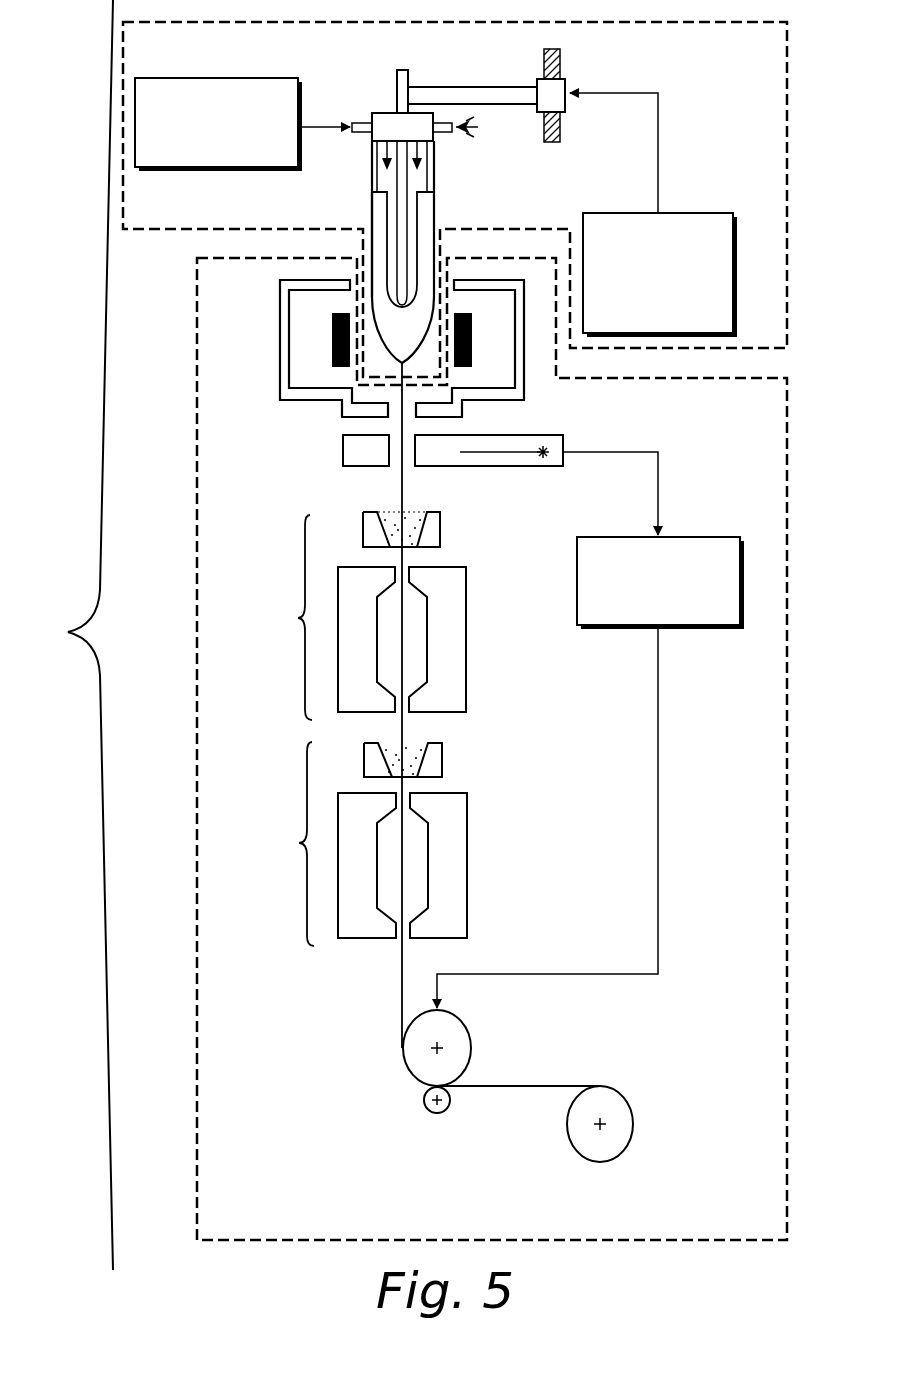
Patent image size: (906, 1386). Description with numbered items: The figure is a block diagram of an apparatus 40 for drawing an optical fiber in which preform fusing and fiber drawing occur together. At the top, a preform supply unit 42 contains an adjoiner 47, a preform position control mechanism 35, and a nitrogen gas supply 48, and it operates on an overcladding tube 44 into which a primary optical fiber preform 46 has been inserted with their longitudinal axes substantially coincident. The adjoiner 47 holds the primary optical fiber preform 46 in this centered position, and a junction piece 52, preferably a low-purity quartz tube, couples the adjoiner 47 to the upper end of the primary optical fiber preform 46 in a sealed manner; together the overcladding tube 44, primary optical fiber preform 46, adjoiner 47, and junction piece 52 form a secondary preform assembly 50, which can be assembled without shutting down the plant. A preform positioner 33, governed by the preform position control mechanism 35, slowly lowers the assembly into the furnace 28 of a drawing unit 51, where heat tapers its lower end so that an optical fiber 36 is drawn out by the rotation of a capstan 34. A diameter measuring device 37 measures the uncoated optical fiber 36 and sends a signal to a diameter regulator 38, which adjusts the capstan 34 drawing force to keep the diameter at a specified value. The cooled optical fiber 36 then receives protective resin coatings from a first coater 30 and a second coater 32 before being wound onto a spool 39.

The furnace 28 is at (280, 341).
The first coater 30 is at (365, 616).
The second coater 32 is at (366, 844).
The preform positioner 33 is at (452, 79).
The capstan 34 is at (464, 1028).
The preform position control mechanism 35 is at (710, 213).
The optical fiber 36 is at (403, 487).
The diameter measuring device 37 is at (343, 452).
The diameter regulator 38 is at (710, 537).
The spool 39 is at (612, 1088).
The apparatus 40 is at (71, 635).
The preform supply unit 42 is at (788, 178).
The overcladding tube 44 is at (432, 216).
The primary optical fiber preform 46 is at (397, 92).
The adjoiner 47 is at (428, 136).
The nitrogen gas supply 48 is at (222, 168).
The secondary preform assembly 50 is at (368, 207).
The drawing unit 51 is at (788, 567).
The junction piece 52 is at (372, 167).